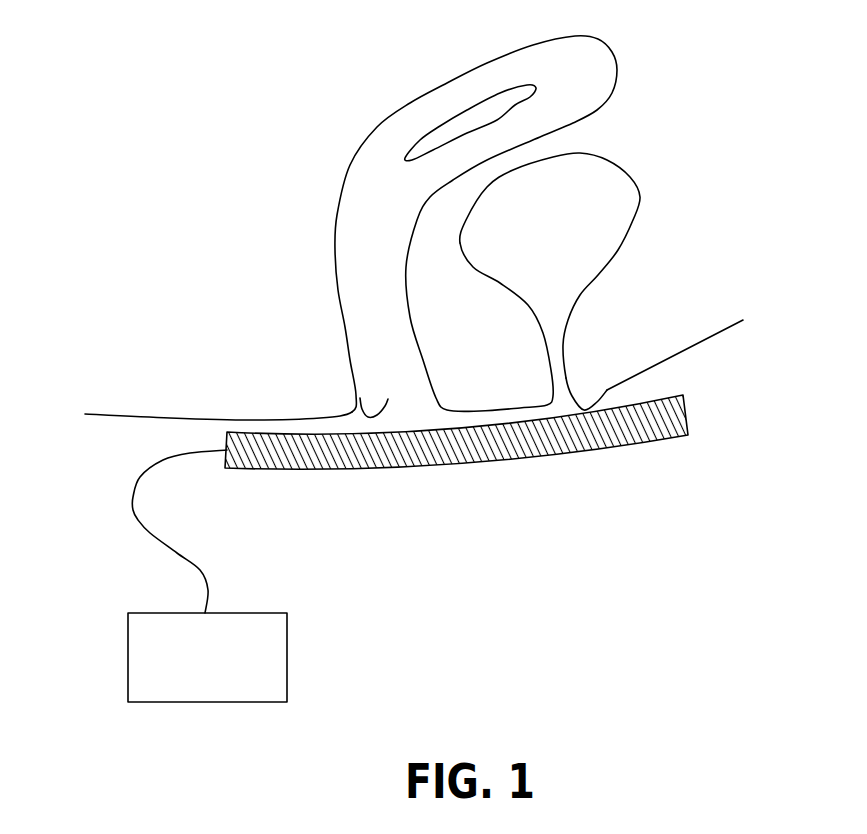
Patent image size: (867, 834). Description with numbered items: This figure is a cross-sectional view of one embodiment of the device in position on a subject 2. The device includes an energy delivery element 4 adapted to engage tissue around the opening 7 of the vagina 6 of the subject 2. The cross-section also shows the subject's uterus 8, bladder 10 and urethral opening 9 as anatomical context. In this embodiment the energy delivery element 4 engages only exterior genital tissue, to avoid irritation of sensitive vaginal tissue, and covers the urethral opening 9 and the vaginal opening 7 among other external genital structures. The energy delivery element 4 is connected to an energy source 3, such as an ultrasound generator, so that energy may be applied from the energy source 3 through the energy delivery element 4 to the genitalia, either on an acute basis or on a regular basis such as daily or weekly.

The subject 2 is at (117, 383).
The energy source 3 is at (287, 642).
The energy delivery element 4 is at (688, 425).
The vagina 6 is at (368, 328).
The opening of the vagina 7 is at (357, 410).
The uterus 8 is at (587, 63).
The urethral opening 9 is at (593, 400).
The bladder 10 is at (612, 203).